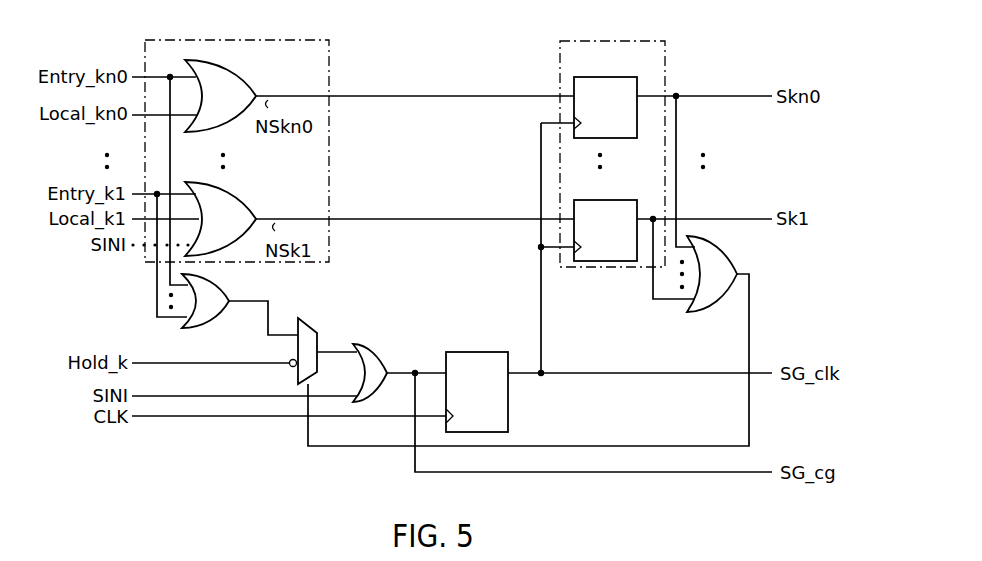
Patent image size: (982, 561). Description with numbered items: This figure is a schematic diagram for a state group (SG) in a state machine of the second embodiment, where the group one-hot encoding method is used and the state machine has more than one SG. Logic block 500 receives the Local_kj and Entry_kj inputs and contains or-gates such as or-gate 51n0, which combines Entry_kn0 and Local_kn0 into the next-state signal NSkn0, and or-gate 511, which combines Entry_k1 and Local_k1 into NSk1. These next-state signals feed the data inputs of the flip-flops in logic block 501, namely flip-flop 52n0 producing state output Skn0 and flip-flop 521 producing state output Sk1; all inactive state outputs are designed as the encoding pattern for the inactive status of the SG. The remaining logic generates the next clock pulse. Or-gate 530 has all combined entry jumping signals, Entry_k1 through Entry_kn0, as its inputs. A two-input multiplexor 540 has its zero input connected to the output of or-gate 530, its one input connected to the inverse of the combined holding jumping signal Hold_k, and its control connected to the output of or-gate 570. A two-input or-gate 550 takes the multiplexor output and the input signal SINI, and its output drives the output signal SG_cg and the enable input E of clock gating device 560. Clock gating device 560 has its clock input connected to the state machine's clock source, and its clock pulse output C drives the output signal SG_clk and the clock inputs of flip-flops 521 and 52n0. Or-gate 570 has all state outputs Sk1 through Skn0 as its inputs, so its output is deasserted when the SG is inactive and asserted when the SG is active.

The logic block 500 is at (230, 40).
The logic block 501 is at (578, 41).
The or-gate 51n0 is at (233, 66).
The or-gate 511 is at (233, 187).
The flip-flop 52n0 is at (585, 77).
The flip-flop 521 is at (587, 200).
The or-gate 530 is at (222, 283).
The 2-input multiplexor 540 is at (333, 327).
The 2-input or-gate 550 is at (370, 345).
The clock gating device 560 is at (472, 352).
The or-gate 570 is at (750, 249).